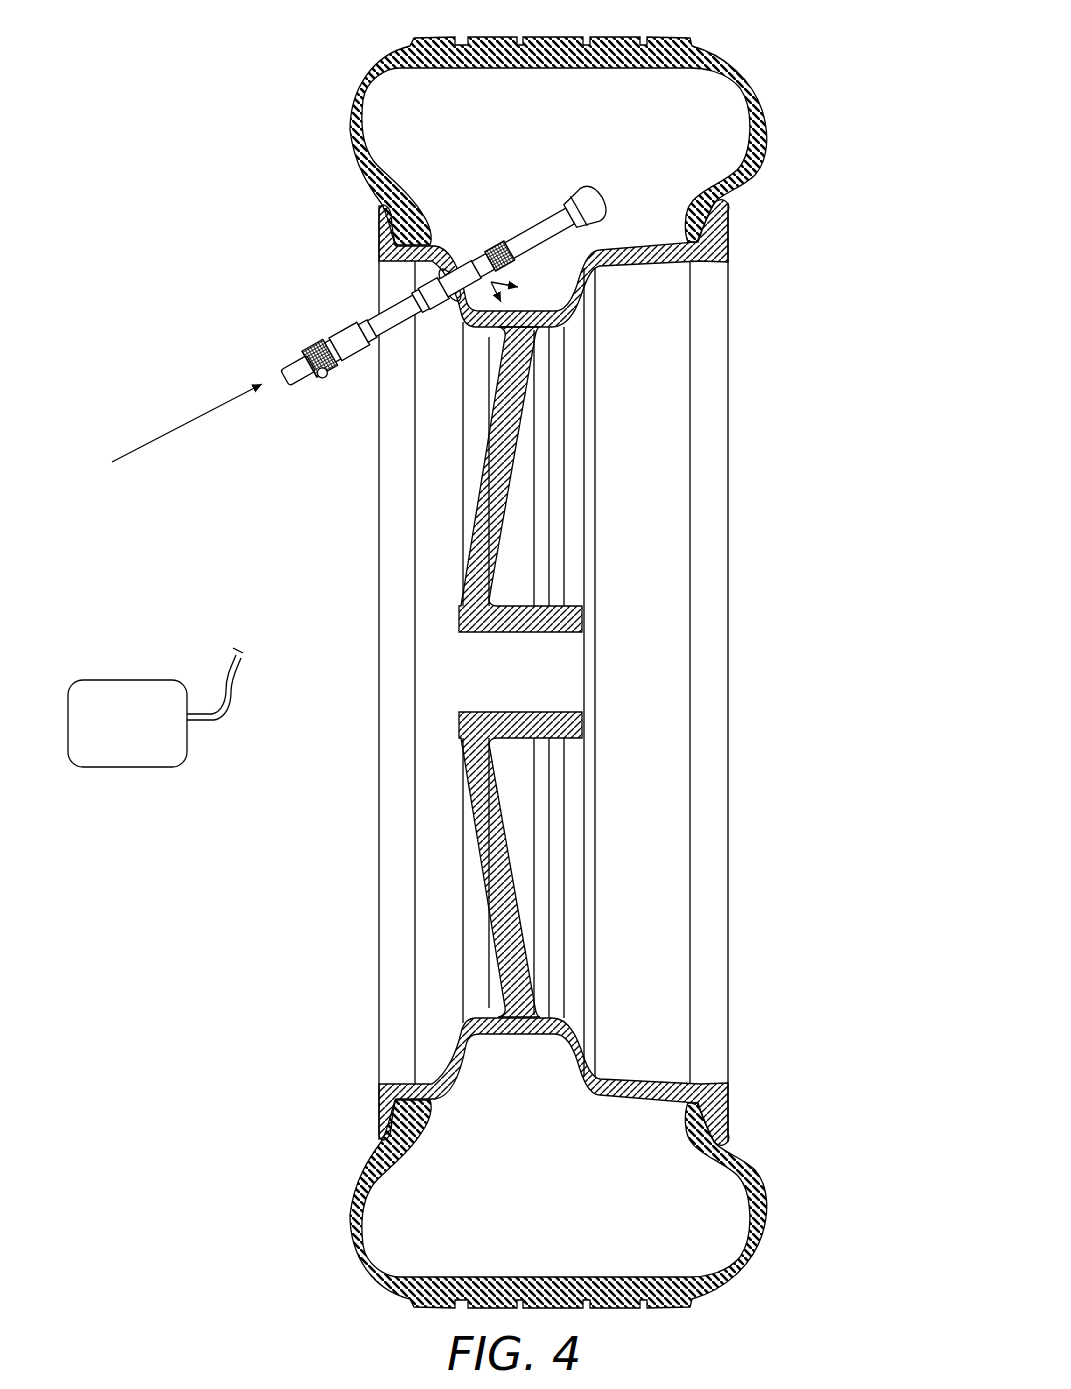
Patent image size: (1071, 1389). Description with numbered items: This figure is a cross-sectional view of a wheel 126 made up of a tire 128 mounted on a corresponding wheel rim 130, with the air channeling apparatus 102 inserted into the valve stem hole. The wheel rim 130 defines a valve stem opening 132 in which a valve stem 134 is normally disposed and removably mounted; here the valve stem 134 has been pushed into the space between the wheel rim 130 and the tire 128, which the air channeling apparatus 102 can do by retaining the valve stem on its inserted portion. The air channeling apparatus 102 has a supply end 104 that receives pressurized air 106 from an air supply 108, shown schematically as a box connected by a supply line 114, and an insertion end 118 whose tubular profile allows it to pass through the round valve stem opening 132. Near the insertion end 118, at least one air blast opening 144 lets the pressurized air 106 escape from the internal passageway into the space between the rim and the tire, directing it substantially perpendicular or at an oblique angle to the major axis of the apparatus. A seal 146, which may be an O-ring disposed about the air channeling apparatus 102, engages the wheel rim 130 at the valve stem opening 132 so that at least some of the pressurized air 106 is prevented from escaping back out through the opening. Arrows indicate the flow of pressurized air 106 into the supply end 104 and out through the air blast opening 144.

The air channeling apparatus 102 is at (447, 252).
The supply end 104 is at (403, 338).
The pressurized air 106 is at (182, 422).
The air supply 108 is at (110, 767).
The supply line 114 is at (290, 356).
The insertion end 118 is at (458, 259).
The wheel 126 is at (340, 832).
The tire 128 is at (697, 47).
The wheel rim 130 is at (476, 533).
The valve stem opening 132 is at (455, 309).
The valve stem 134 is at (530, 226).
The air blast opening 144 is at (478, 258).
The seal 146 is at (448, 292).